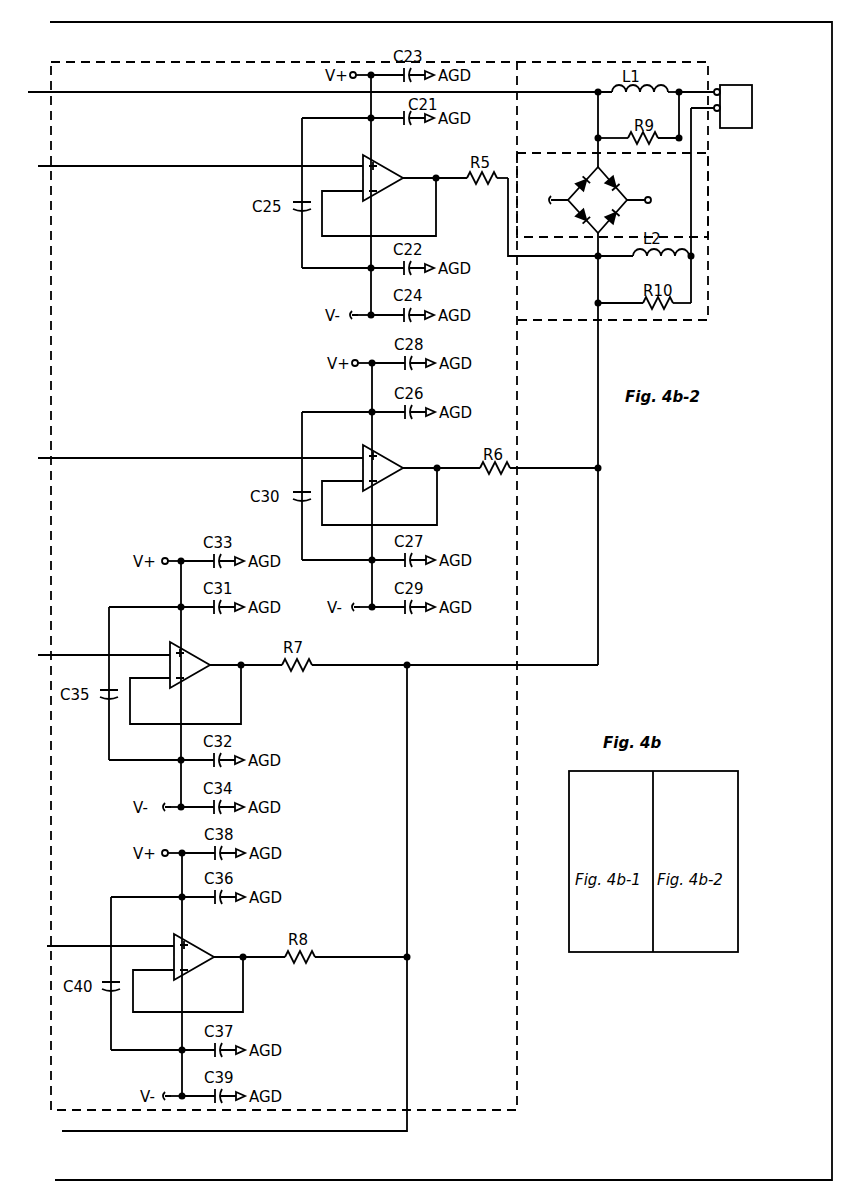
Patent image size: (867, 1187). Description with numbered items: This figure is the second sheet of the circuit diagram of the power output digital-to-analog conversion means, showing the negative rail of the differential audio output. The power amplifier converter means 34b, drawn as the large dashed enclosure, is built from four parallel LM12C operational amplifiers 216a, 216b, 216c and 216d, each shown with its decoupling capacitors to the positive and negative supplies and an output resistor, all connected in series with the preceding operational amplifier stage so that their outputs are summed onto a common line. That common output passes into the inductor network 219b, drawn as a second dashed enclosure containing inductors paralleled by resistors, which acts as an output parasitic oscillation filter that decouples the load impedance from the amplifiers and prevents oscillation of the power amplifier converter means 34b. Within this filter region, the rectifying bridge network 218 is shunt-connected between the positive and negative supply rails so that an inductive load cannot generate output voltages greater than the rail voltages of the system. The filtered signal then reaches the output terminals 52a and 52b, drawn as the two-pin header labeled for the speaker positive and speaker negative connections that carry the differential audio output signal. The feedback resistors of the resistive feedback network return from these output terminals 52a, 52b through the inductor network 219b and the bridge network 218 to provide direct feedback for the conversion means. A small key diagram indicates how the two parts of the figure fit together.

The power amplifier converter means 34b is at (346, 60).
The inductor network 219b is at (551, 60).
The rectifying bridge network 218 is at (710, 220).
The output terminal 52a is at (718, 84).
The output terminal 52b is at (714, 101).
The operational amplifier 216a is at (364, 163).
The operational amplifier 216b is at (364, 453).
The operational amplifier 216c is at (210, 665).
The operational amplifier 216d is at (200, 953).